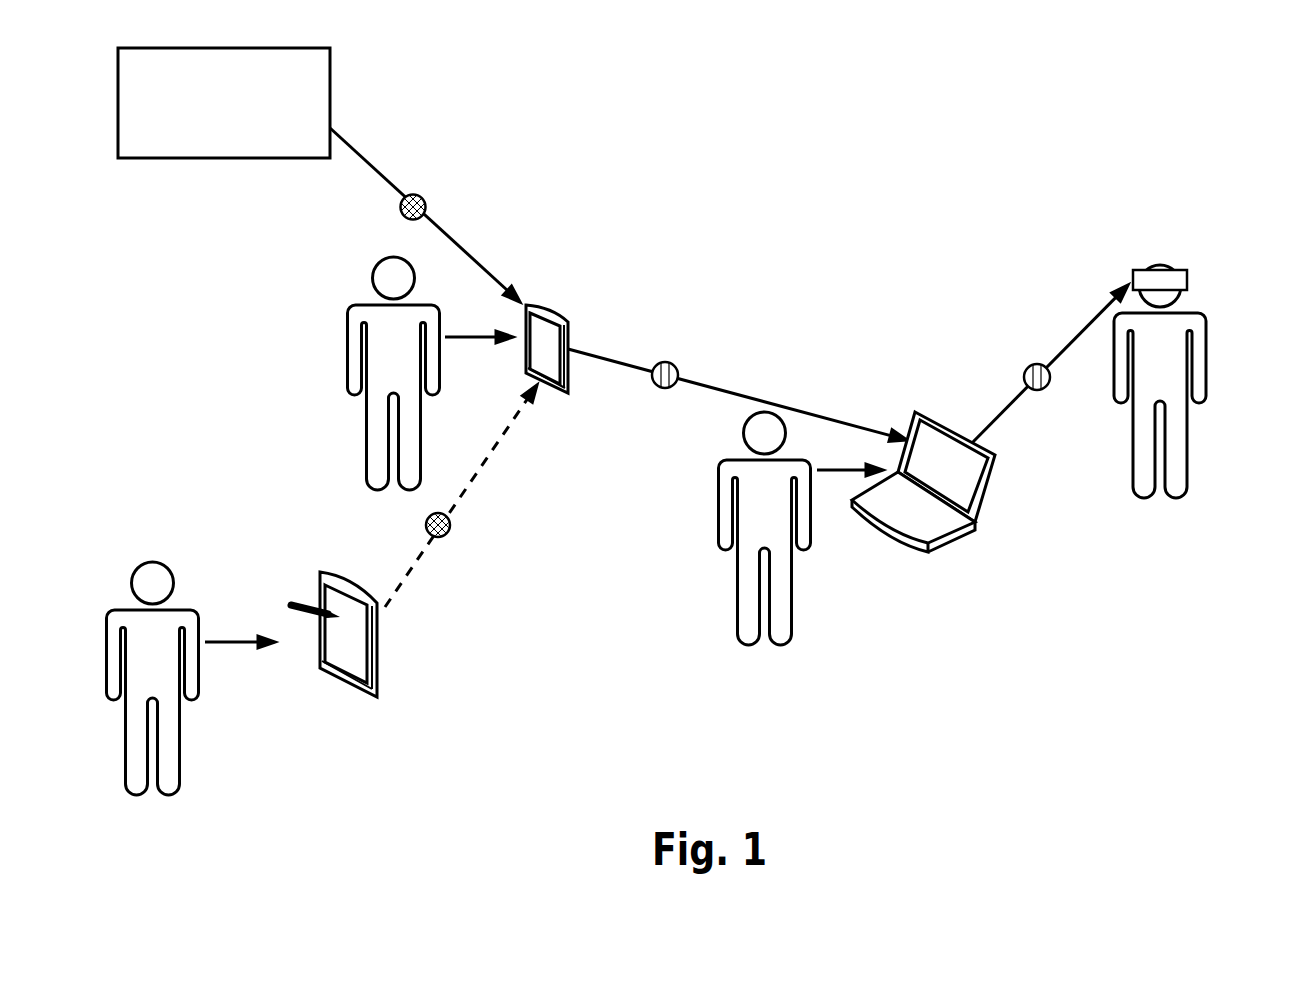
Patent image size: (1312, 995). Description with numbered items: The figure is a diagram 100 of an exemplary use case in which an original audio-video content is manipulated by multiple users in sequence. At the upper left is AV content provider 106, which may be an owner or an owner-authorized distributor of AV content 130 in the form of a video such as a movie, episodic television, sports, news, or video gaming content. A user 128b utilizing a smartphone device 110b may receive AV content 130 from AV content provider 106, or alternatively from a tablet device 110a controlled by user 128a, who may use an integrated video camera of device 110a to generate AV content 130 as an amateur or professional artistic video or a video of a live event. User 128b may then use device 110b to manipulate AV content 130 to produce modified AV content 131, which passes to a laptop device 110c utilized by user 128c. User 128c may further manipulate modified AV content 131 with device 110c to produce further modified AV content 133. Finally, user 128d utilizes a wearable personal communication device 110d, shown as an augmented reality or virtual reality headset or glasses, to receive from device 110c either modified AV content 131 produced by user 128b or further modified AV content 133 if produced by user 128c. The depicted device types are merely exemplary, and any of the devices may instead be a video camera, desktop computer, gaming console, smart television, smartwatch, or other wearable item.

The diagram 100 is at (1095, 95).
The AV content provider 106 is at (218, 159).
The device 110a is at (377, 672).
The device 110b is at (548, 317).
The device 110c is at (998, 463).
The wearable personal communication device 110d is at (1176, 278).
The user 128a is at (198, 608).
The user 128b is at (347, 334).
The user 128c is at (717, 491).
The user 128d is at (1207, 343).
The AV content 130 is at (427, 207).
The modified AV content 131 is at (669, 363).
The further modified AV content 133 is at (1028, 365).